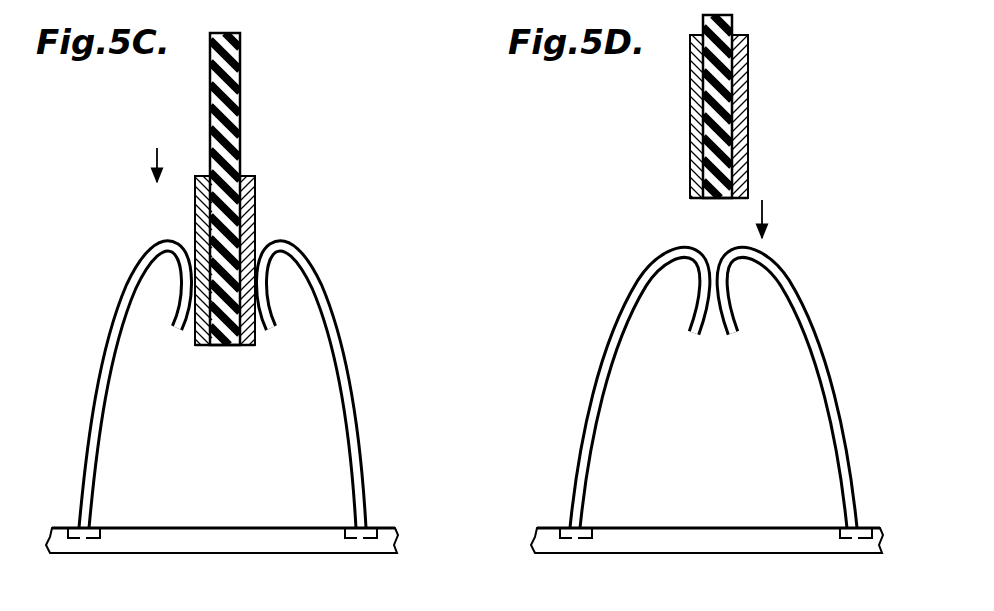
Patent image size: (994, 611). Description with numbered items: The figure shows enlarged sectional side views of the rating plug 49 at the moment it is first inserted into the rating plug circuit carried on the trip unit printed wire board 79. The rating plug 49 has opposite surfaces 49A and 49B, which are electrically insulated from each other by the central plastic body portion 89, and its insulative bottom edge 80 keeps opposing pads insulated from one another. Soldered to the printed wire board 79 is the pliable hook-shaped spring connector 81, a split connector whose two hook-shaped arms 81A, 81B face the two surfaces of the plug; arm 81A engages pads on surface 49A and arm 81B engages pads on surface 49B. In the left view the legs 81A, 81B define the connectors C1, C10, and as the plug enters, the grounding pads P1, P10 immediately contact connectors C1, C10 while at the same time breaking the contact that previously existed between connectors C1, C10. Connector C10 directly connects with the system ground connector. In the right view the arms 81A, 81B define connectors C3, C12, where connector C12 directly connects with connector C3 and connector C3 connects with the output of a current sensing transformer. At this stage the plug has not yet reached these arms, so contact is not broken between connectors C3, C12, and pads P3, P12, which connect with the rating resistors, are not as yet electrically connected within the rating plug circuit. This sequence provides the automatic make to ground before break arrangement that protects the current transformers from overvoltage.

In FIG. 5C, the rating plug 49 is at (254, 189).
In FIG. 5D, the rating plug 49 is at (744, 99).
In FIG. 5C, the surface of rating plug 49A is at (208, 176).
In FIG. 5D, the surface of rating plug 49A is at (690, 78).
In FIG. 5C, the opposite surface of rating plug 49B is at (255, 176).
In FIG. 5D, the opposite surface of rating plug 49B is at (749, 48).
In FIG. 5C, the central plastic body portion 89 is at (242, 60).
In FIG. 5D, the central plastic body portion 89 is at (733, 18).
In FIG. 5C, the bottom edge of rating plug 80 is at (228, 352).
In FIG. 5D, the bottom edge of rating plug 80 is at (715, 200).
In FIG. 5C, the hook-shaped spring connector 81 is at (400, 296).
In FIG. 5D, the hook-shaped spring connector 81 is at (875, 298).
In FIG. 5C, the hook-shaped arm 81A is at (97, 470).
In FIG. 5D, the hook-shaped arm 81A is at (590, 460).
In FIG. 5C, the hook-shaped arm 81B is at (354, 489).
In FIG. 5D, the hook-shaped arm 81B is at (843, 484).
In FIG. 5C, the printed wire board 79 is at (217, 528).
In FIG. 5D, the printed wire board 79 is at (728, 528).
In FIG. 5C, the grounding pad P1 is at (195, 204).
In FIG. 5C, the grounding pad P10 is at (256, 200).
In FIG. 5D, the pad P3 is at (690, 174).
In FIG. 5D, the pad P12 is at (750, 178).
In FIG. 5C, the connector C1 is at (95, 346).
In FIG. 5C, the connector C10 is at (354, 344).
In FIG. 5D, the connector C3 is at (600, 330).
In FIG. 5D, the connector C12 is at (830, 335).